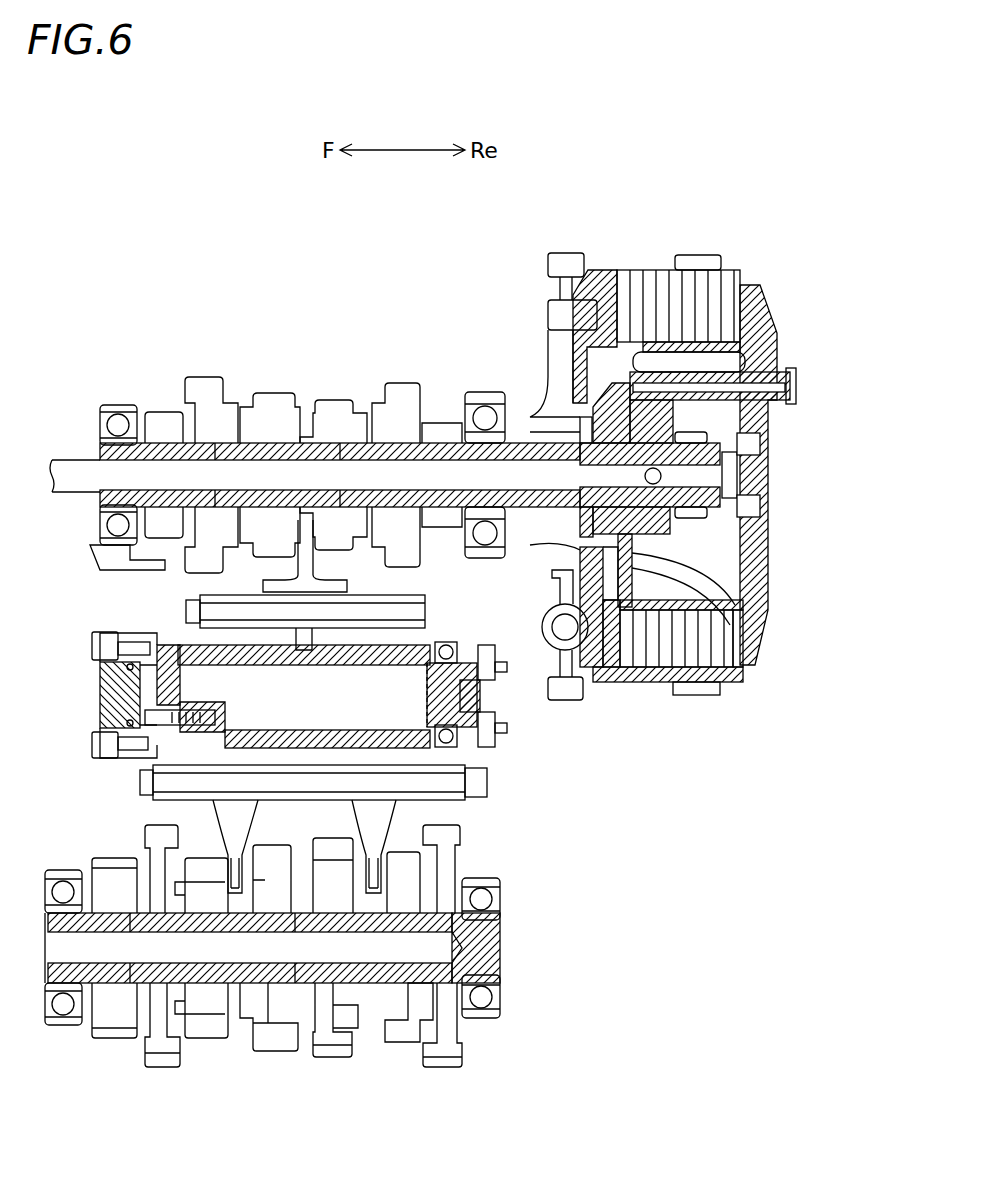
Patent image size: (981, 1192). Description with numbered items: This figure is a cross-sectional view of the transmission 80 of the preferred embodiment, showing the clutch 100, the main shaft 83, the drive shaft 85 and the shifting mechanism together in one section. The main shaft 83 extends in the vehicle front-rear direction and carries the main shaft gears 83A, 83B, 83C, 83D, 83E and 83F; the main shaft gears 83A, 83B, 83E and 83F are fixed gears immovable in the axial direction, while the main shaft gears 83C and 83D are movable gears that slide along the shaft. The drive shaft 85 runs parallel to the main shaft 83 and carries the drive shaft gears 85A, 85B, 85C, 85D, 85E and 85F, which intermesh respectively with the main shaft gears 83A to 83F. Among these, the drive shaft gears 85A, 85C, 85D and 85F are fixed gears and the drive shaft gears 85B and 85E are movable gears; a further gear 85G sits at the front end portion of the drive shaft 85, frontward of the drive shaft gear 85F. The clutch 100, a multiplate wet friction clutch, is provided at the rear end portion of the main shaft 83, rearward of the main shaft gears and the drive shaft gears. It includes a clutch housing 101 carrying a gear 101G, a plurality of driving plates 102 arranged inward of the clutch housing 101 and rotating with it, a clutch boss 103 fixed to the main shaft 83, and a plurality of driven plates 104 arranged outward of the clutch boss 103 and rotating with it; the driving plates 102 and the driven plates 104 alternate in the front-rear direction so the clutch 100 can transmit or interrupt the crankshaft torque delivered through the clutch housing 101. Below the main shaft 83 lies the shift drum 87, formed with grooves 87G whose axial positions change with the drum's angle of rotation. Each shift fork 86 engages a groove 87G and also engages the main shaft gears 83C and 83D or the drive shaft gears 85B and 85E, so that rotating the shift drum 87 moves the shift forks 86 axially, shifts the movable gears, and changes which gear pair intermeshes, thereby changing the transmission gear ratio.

The transmission 80 is at (762, 226).
The clutch 100 is at (803, 317).
The main shaft 83 is at (153, 497).
The main shaft gear 83A is at (435, 430).
The main shaft gear 83B is at (400, 390).
The main shaft gear 83C is at (338, 406).
The main shaft gear 83D is at (275, 398).
The main shaft gear 83E is at (205, 382).
The main shaft gear 83F is at (160, 418).
The drive shaft 85 is at (452, 972).
The drive shaft gear 85A is at (450, 1062).
The drive shaft gear 85B is at (398, 1037).
The drive shaft gear 85C is at (323, 1048).
The drive shaft gear 85D is at (265, 1040).
The drive shaft gear 85E is at (198, 1030).
The drive shaft gear 85F is at (152, 1062).
The gear 85G is at (110, 1028).
The shift fork 86 is at (268, 568).
The shift drum 87 is at (152, 678).
The groove 87G is at (298, 650).
The clutch housing 101 is at (640, 683).
The gear 101G is at (570, 690).
The driving plate 102 is at (723, 640).
The clutch boss 103 is at (630, 552).
The driven plate 104 is at (707, 657).